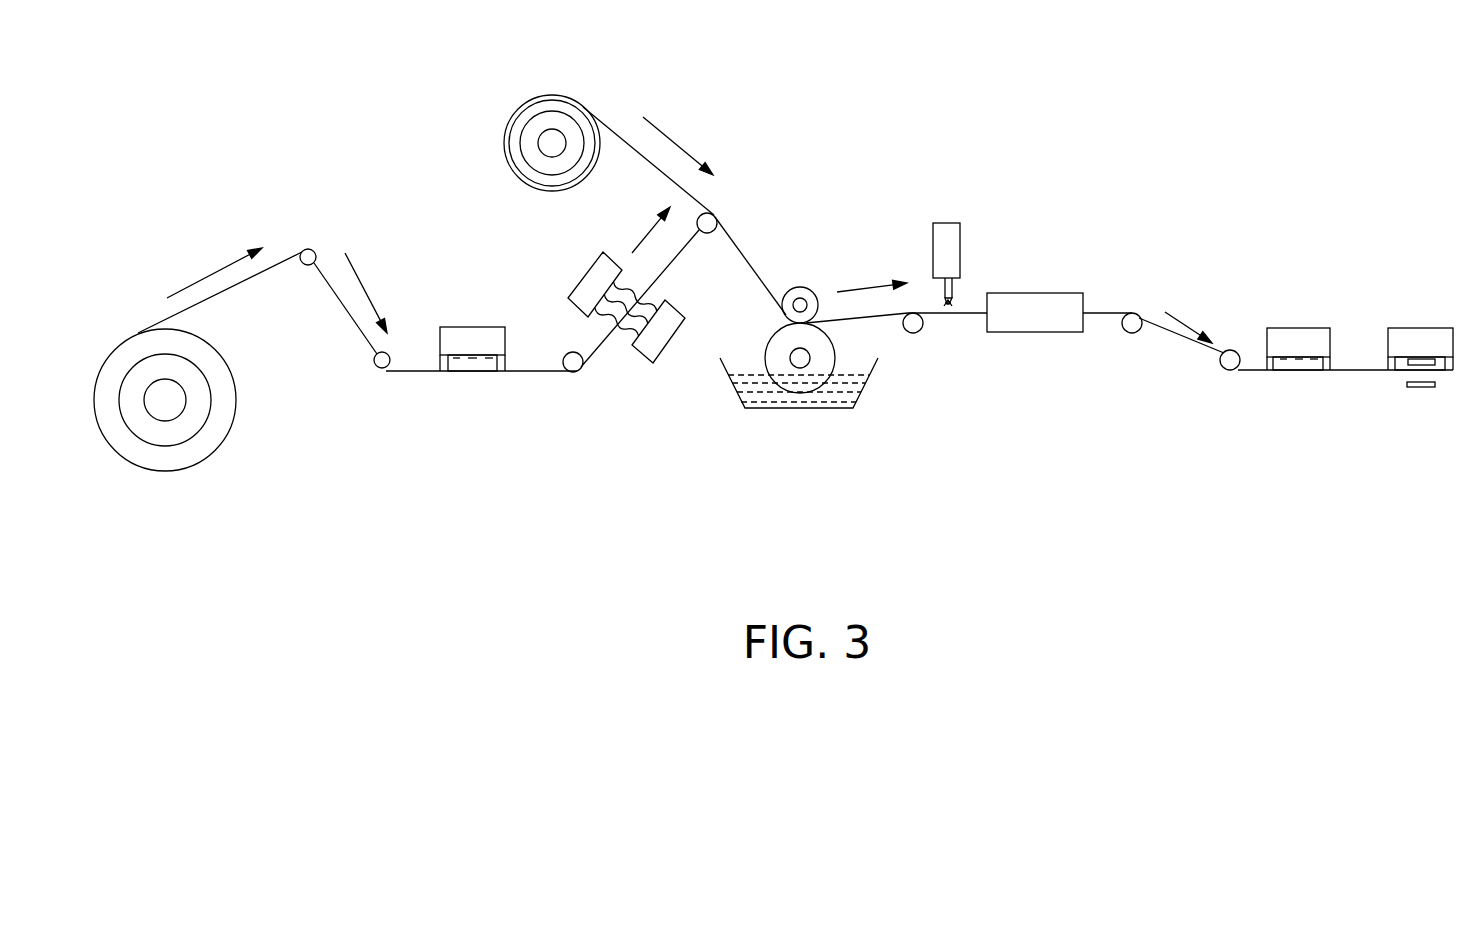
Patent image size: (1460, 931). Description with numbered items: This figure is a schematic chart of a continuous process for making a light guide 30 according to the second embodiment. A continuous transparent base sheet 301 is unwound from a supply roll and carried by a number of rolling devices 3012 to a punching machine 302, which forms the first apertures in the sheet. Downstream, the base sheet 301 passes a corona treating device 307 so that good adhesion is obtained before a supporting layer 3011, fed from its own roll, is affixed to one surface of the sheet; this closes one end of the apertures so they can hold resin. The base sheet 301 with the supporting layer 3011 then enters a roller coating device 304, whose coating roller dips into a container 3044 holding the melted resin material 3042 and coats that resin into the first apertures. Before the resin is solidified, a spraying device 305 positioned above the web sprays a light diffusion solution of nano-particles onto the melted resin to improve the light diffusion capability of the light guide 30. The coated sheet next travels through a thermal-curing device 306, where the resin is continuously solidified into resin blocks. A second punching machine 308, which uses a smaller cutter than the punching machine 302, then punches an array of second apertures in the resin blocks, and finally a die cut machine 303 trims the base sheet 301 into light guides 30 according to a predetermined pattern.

The light guide 30 is at (1417, 388).
The transparent base sheet 301 is at (213, 425).
The supporting layer 3011 is at (552, 107).
The rolling devices 3012 is at (309, 247).
The punching machine 302 is at (472, 335).
The die cut machine 303 is at (1420, 337).
The roller coating device 304 is at (800, 288).
The melted resin material 3042 is at (812, 403).
The container 3044 is at (867, 385).
The spraying device 305 is at (948, 235).
The thermal-curing device 306 is at (1044, 302).
The corona treating device 307 is at (653, 345).
The punching machine 308 is at (1297, 337).